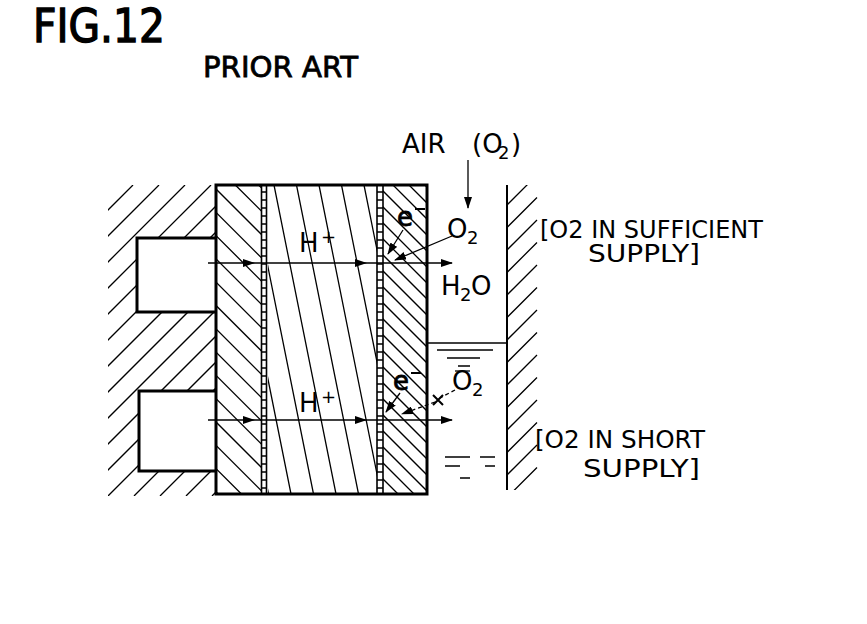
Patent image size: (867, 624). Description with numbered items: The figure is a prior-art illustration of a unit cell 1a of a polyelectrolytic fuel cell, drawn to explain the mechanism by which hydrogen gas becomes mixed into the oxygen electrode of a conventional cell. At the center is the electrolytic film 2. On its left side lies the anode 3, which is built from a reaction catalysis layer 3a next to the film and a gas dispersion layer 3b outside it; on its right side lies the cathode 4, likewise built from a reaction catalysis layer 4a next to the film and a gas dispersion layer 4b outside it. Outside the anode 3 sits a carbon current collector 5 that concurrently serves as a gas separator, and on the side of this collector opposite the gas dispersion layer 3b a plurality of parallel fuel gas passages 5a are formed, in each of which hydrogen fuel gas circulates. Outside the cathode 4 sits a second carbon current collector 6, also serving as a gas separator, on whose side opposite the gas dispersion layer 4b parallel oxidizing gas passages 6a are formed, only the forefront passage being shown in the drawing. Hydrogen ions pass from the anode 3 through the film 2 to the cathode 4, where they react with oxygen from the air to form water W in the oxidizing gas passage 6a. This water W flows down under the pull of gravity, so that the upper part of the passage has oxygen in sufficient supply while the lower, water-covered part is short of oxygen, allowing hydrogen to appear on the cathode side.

The unit cell 1a is at (266, 170).
The electrolytic film 2 is at (312, 498).
The anode 3 is at (178, 530).
The reaction catalysis layer 3a is at (265, 495).
The gas dispersion layer 3b is at (240, 494).
The cathode 4 is at (436, 520).
The reaction catalysis layer 4a is at (378, 495).
The gas dispersion layer 4b is at (408, 494).
The carbon current collector 5 is at (123, 320).
The fuel gas passage 5a is at (140, 252).
The carbon current collector 6 is at (539, 351).
The oxidizing gas passage 6a is at (477, 463).
The water W is at (502, 386).